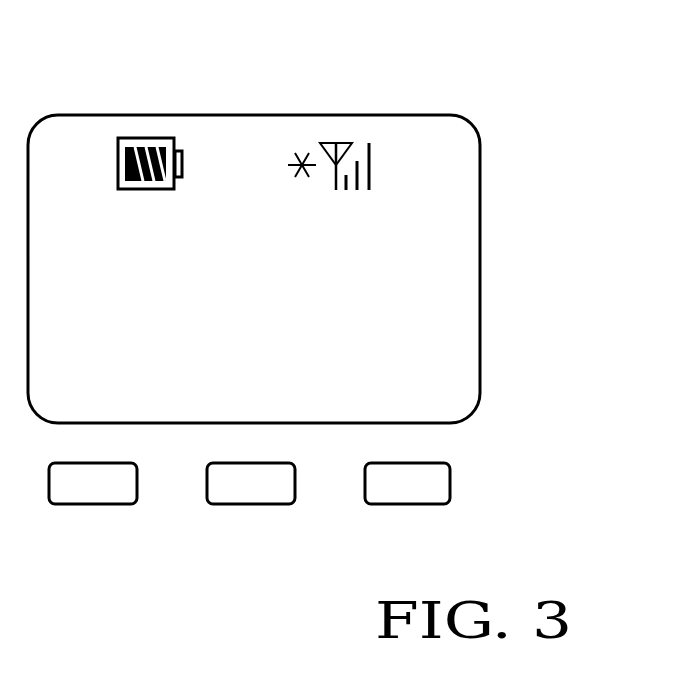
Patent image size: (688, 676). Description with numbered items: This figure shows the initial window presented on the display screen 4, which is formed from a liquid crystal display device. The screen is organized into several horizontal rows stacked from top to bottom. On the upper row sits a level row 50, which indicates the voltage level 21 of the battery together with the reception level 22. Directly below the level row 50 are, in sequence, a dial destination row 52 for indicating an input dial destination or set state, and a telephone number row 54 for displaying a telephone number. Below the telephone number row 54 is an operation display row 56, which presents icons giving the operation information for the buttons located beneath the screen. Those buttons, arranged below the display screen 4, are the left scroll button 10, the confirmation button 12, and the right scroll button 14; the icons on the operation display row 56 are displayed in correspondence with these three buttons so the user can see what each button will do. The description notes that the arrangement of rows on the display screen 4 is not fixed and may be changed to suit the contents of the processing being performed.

The display screen 4 is at (73, 104).
The voltage level of a battery 21 is at (159, 112).
The reception level 22 is at (345, 112).
The level row 50 is at (349, 106).
The dial destination row 52 is at (500, 235).
The telephone number row 54 is at (500, 297).
The operation display row 56 is at (500, 358).
The left scroll button 10 is at (80, 500).
The confirmation button 12 is at (230, 500).
The right scroll button 14 is at (397, 500).